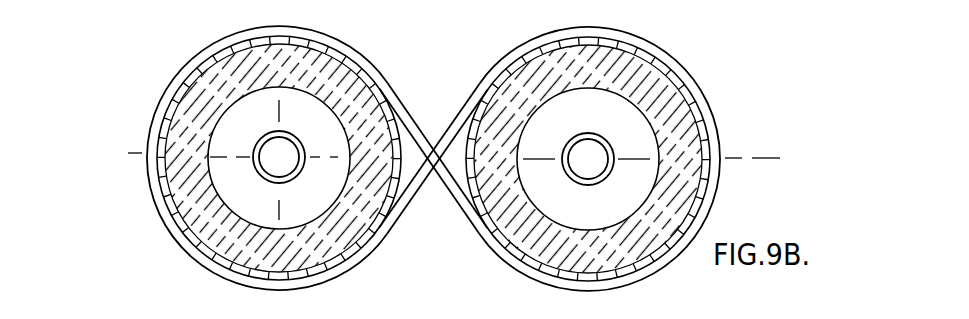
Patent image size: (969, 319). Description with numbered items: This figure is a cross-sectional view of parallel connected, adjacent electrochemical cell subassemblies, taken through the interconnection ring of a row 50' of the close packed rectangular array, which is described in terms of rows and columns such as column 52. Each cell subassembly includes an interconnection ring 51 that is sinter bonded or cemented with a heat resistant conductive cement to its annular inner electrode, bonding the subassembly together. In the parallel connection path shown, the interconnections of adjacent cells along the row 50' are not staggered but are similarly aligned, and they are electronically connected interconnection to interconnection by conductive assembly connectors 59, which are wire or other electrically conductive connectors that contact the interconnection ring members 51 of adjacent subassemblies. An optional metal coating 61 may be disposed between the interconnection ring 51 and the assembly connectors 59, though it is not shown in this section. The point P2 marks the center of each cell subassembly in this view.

The row 50' is at (426, 158).
The interconnection ring 51 is at (690, 144).
The column 52 is at (273, 250).
The conductive assembly connector 59 is at (463, 207).
The metal coating 61 is at (683, 85).
The pivot axis P2 is at (279, 157).